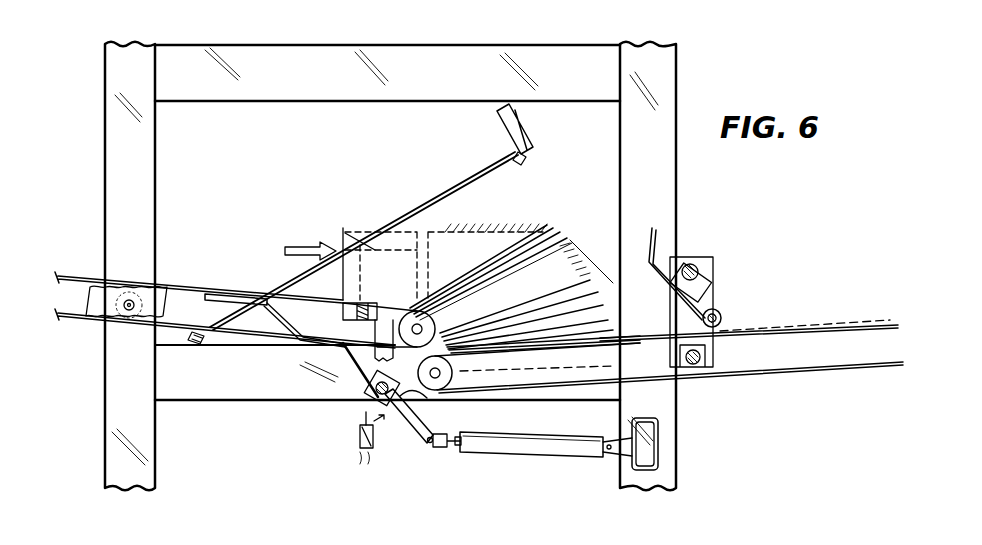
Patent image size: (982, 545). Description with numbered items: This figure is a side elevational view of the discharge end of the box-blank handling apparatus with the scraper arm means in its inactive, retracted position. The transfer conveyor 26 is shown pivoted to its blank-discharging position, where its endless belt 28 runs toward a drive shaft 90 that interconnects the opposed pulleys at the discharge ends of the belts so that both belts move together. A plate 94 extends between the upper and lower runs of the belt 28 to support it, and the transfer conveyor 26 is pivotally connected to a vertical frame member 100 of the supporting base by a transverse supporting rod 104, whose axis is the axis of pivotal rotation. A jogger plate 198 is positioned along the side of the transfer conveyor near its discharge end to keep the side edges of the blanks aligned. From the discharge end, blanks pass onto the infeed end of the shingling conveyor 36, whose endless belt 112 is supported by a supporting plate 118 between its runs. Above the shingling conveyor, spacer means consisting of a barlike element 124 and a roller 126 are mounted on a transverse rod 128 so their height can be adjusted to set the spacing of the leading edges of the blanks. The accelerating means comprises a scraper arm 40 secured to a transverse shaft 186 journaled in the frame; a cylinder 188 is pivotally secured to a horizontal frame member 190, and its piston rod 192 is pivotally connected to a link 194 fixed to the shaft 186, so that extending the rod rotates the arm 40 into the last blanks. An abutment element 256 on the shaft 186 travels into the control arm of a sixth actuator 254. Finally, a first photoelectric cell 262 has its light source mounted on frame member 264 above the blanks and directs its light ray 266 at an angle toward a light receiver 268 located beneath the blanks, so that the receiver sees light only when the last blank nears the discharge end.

The vertical frame member 100 is at (115, 152).
The frame member 264 is at (588, 78).
The belt 28 is at (60, 272).
The transfer conveyor 26 is at (71, 328).
The plate 94 is at (156, 290).
The transverse supporting rod 104 is at (130, 308).
The scraper arm 40 is at (213, 294).
The light ray 266 is at (446, 197).
The light receiver 268 is at (196, 345).
The first photoelectric cell 262 is at (533, 137).
The jogger plate 198 is at (342, 233).
The drive shaft 90 is at (421, 328).
The endless belt 112 is at (826, 312).
The shingling conveyor 36 is at (865, 306).
The abutment element 256 is at (421, 399).
The transverse rod 128 is at (705, 270).
The roller 126 is at (717, 314).
The barlike element 124 is at (656, 234).
The supporting plate 118 is at (371, 355).
The transverse shaft 186 is at (368, 388).
The link 194 is at (412, 446).
The piston rod 192 is at (452, 449).
The cylinder 188 is at (500, 456).
The horizontal frame member 190 is at (660, 445).
The sixth actuator 254 is at (360, 437).